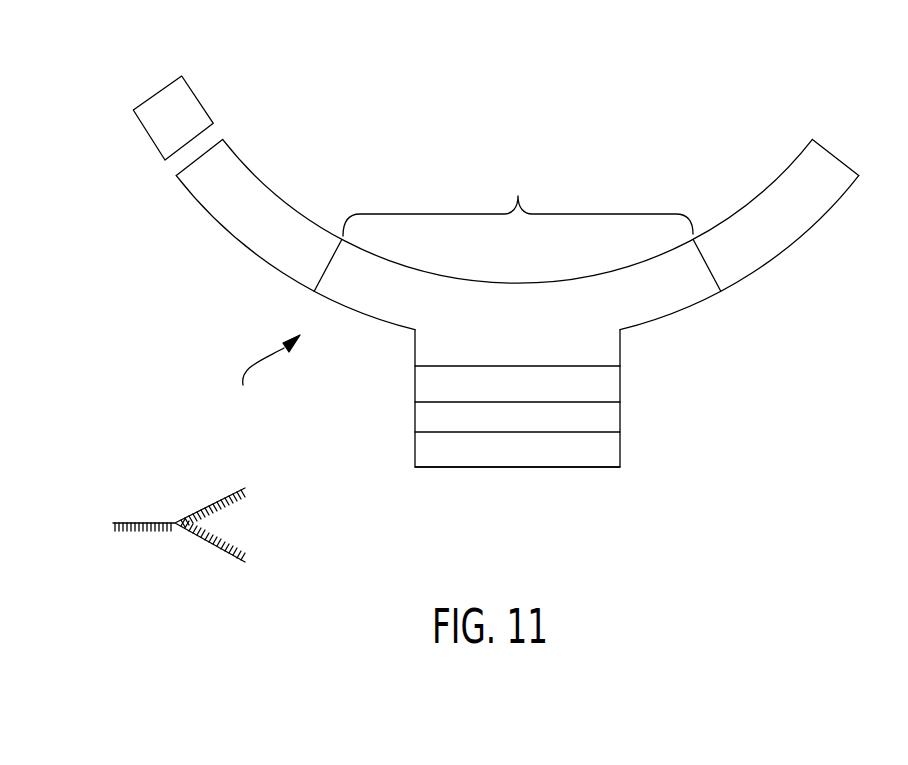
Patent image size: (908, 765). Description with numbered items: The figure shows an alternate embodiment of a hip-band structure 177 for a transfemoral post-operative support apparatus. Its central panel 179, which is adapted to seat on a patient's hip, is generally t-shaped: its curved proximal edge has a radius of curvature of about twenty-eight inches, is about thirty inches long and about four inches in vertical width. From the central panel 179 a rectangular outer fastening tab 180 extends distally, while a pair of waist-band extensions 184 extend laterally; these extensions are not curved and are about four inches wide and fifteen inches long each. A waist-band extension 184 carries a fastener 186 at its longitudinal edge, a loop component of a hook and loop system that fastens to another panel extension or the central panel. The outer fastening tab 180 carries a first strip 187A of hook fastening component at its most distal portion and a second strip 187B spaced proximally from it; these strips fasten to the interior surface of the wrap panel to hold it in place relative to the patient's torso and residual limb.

The hip-band structure 177 is at (266, 379).
The central panel 179 is at (517, 150).
The outer fastening tab 180 is at (410, 335).
The waist-band extension 184 is at (230, 217).
The fastener 186 is at (187, 112).
The first strip 187A is at (575, 457).
The second strip 187B is at (577, 382).